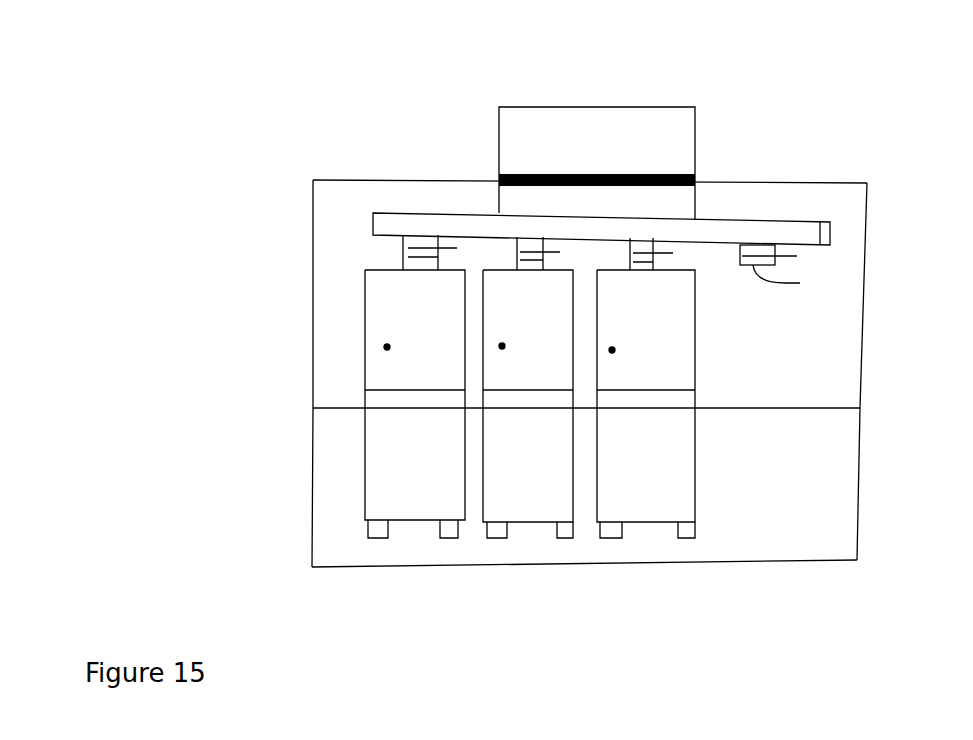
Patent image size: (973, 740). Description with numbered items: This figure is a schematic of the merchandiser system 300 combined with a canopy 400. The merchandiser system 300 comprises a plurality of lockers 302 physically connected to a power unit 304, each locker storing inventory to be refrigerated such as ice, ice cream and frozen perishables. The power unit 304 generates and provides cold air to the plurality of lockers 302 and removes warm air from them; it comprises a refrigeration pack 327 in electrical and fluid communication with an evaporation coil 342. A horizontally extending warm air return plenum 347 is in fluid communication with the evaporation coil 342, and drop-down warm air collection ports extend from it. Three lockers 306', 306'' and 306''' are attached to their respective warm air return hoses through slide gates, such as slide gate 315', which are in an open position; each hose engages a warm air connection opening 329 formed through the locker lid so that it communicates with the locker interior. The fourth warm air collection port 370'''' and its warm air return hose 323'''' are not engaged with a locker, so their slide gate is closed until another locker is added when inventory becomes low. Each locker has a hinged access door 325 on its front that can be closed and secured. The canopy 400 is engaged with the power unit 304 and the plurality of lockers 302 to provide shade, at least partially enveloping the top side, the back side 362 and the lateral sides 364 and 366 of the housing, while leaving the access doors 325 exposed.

The merchandiser system 300 is at (668, 172).
The plurality of lockers 302 is at (511, 434).
The power unit 304 is at (662, 138).
The locker 306' is at (415, 450).
The locker 306'' is at (528, 452).
The locker 306''' is at (646, 448).
The slide gate 315' is at (853, 255).
The warm air return hose 323'''' is at (857, 281).
The access door 325 is at (380, 330).
The refrigeration pack 327 is at (573, 117).
The warm air connection opening 329 is at (420, 270).
The evaporation coil 342 is at (688, 208).
The warm air return plenum 347 is at (820, 240).
The back side 362 is at (857, 545).
The lateral side 364 is at (313, 382).
The lateral side 366 is at (858, 358).
The warm air collection port 370'''' is at (849, 203).
The canopy 400 is at (590, 340).